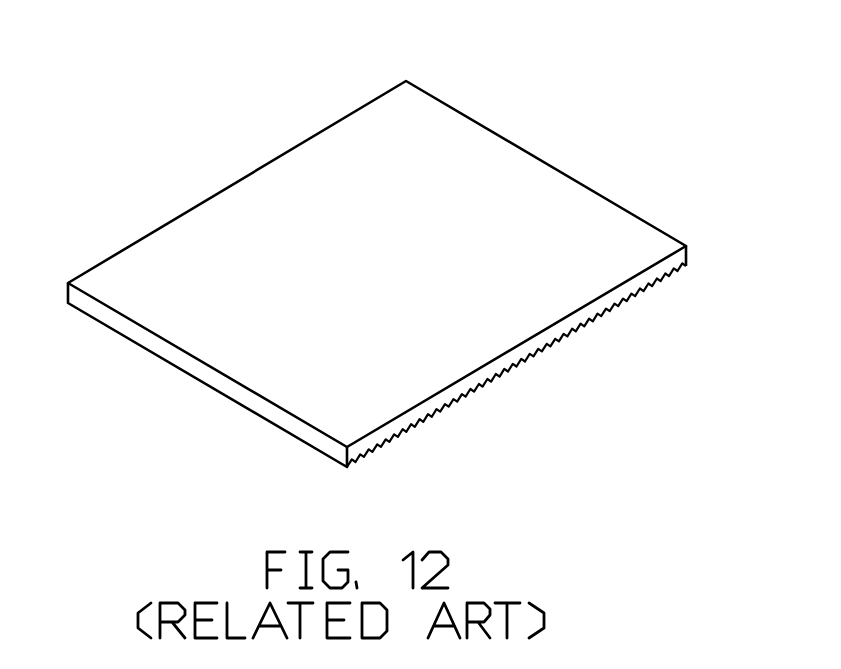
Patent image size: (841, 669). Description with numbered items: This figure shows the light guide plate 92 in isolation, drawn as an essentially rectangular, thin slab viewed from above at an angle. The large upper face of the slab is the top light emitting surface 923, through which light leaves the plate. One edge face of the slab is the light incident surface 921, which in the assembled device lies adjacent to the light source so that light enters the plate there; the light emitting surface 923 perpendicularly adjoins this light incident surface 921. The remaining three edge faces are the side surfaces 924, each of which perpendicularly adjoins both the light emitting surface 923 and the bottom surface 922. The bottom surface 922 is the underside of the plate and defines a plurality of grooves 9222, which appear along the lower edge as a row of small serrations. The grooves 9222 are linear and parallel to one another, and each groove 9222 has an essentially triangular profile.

The light guide plate 92 is at (381, 41).
The light incident surface 921 is at (275, 408).
The bottom surface 922 is at (526, 359).
The grooves 9222 is at (648, 291).
The light emitting surface 923 is at (530, 175).
The side surfaces 924 is at (235, 176).